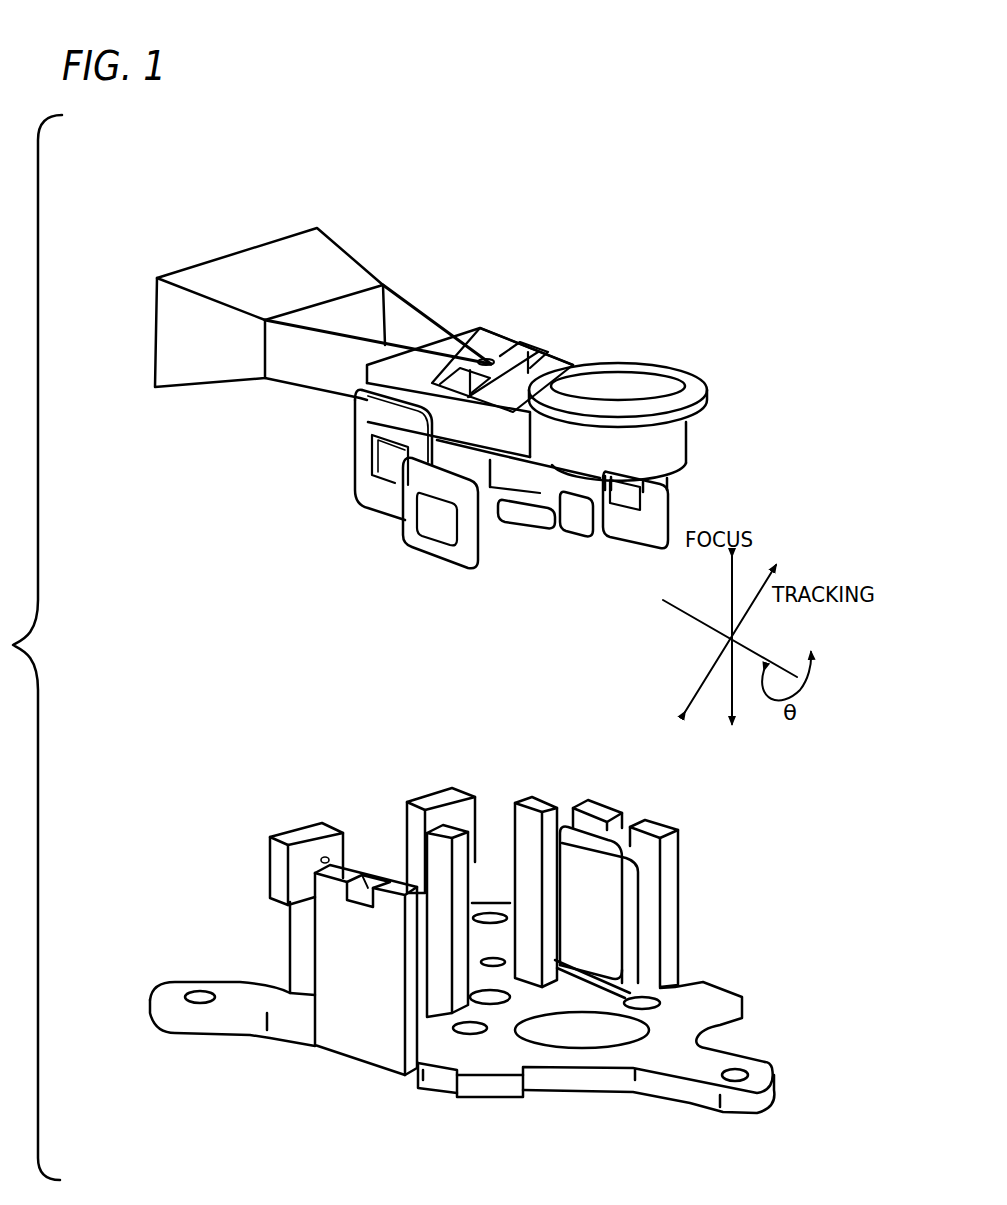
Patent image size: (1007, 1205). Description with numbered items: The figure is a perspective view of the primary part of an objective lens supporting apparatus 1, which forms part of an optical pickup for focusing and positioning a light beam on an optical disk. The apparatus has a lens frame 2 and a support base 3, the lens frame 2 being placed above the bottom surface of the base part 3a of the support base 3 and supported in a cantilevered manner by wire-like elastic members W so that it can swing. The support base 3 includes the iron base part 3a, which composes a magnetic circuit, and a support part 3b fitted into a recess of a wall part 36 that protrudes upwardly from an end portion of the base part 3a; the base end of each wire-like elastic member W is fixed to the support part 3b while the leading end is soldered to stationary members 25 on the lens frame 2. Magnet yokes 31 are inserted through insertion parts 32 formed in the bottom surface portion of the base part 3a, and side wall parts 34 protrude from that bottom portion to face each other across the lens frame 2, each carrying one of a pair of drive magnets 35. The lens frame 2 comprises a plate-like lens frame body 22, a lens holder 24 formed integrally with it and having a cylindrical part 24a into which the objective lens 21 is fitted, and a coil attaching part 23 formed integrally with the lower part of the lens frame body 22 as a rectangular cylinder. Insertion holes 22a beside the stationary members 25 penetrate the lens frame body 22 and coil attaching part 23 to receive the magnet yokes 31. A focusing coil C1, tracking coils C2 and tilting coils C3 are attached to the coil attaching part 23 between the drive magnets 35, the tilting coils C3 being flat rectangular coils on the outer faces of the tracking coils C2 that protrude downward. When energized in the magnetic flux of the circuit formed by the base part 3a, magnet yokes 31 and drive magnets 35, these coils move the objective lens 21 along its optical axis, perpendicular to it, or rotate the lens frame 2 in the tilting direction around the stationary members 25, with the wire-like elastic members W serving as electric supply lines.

The objective lens supporting apparatus 1 is at (692, 249).
The lens frame 2 is at (742, 372).
The support base 3 is at (439, 947).
The base part 3a is at (200, 928).
The support part 3b is at (125, 245).
The objective lens 21 is at (615, 383).
The lens frame body 22 is at (568, 372).
The insertion holes 22a is at (455, 385).
The coil attaching part 23 is at (503, 527).
The lens holder 24 is at (673, 443).
The cylindrical part 24a is at (703, 403).
The stationary members 25 is at (497, 332).
The wire-like elastic members W is at (403, 300).
The focusing coil C1 is at (527, 513).
The tracking coil C2 is at (355, 497).
The tilting coil C3 is at (423, 543).
The magnet yokes 31 is at (455, 1000).
The insertion parts 32 is at (468, 1035).
The side wall parts 34 is at (670, 865).
The drive magnets 35 is at (373, 881).
The wall part 36 is at (440, 797).